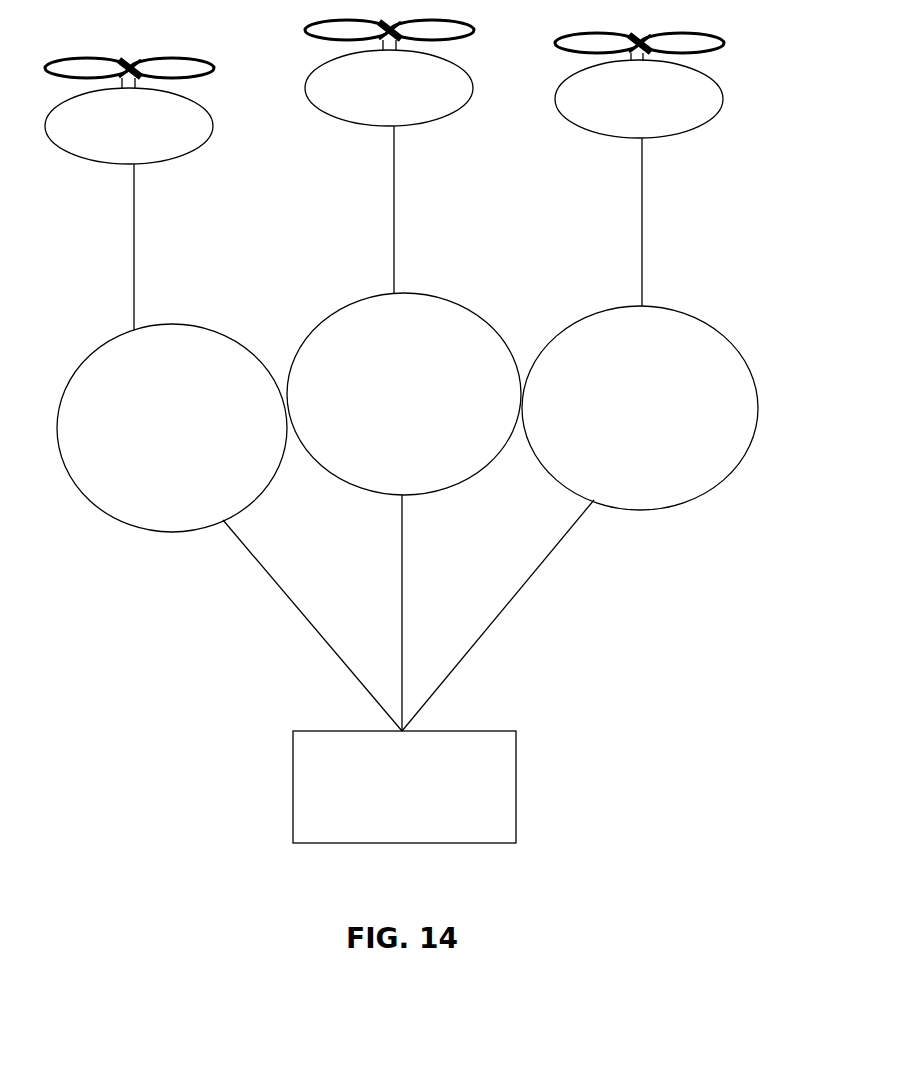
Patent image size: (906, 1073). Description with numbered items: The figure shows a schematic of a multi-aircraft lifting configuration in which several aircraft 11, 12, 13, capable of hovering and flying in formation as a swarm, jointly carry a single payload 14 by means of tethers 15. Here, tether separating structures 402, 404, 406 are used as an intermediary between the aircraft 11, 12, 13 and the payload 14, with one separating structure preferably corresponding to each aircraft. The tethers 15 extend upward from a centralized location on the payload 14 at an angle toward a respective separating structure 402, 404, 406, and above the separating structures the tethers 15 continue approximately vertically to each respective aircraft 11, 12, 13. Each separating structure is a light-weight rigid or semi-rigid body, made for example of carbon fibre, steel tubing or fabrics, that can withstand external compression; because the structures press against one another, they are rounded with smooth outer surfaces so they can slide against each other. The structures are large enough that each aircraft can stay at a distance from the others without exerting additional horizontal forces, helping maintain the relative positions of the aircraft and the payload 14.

The aircraft H1 11 is at (203, 107).
The aircraft H2 12 is at (463, 70).
The aircraft Hn 13 is at (713, 82).
The payload 14 is at (517, 762).
The tether 15 is at (134, 238).
The tether separating structure 402 is at (183, 327).
The tether separating structure 404 is at (453, 300).
The tether separating structure 406 is at (720, 337).